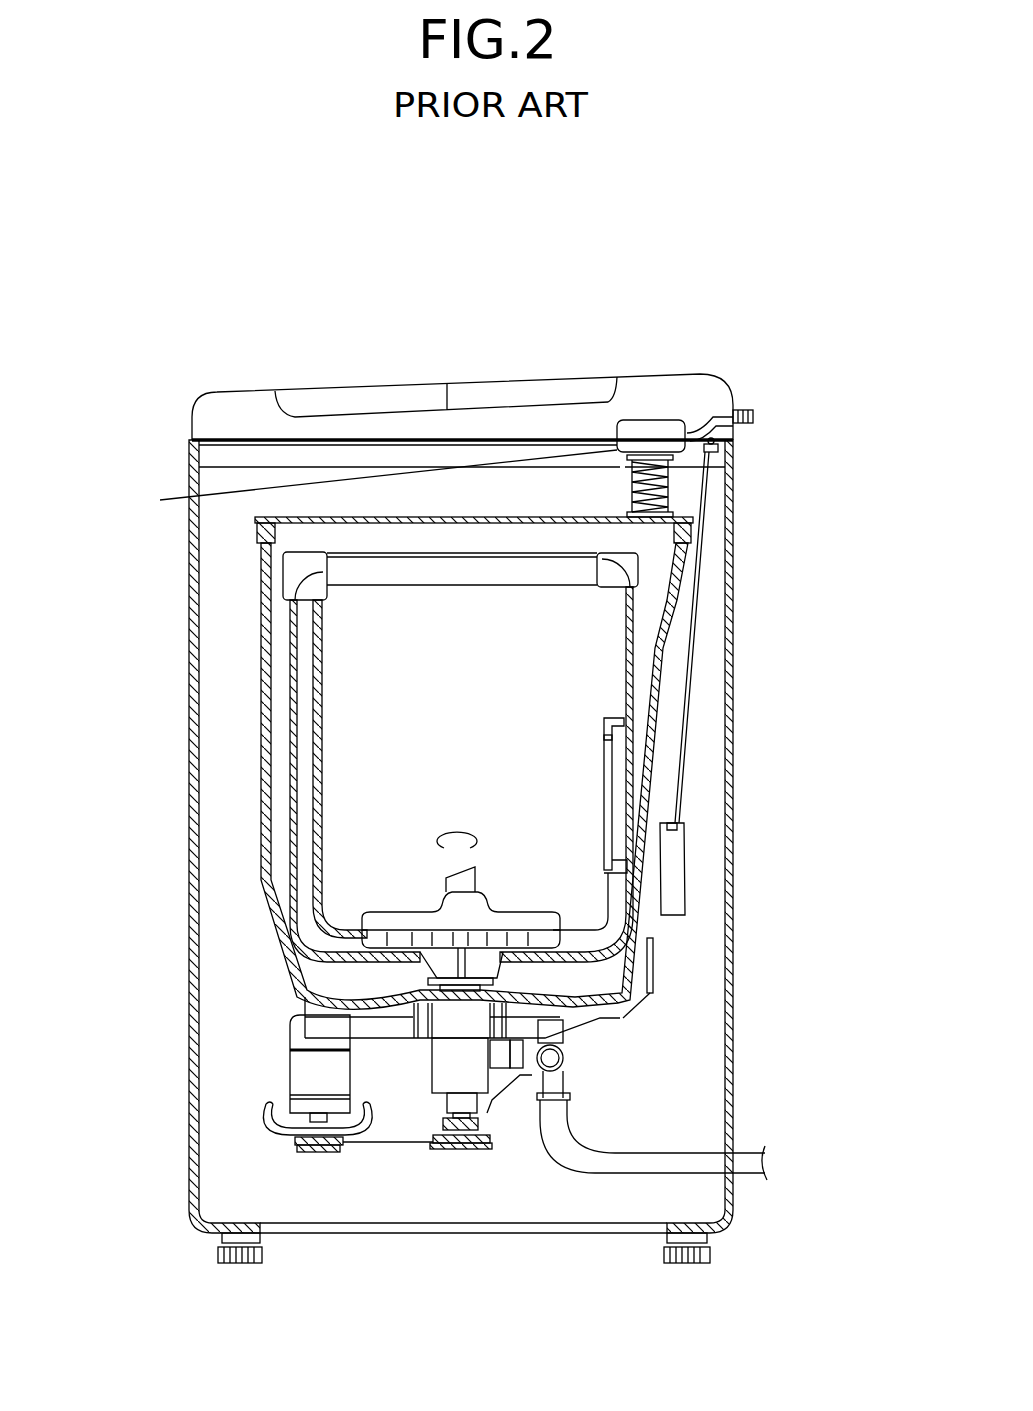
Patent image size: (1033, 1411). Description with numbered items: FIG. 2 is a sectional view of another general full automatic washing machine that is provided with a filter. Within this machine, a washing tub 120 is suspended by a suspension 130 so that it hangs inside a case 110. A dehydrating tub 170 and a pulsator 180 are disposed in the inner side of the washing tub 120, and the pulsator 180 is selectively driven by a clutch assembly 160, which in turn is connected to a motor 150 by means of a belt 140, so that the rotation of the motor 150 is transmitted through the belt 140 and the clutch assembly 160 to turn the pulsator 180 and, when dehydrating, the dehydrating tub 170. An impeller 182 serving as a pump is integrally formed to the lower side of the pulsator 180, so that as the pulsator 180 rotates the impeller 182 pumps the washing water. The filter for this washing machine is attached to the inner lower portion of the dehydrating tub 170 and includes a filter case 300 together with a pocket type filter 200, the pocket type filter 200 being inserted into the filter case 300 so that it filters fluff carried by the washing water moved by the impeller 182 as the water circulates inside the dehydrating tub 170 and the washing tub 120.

The case 110 is at (732, 492).
The washing tub 120 is at (650, 643).
The suspension 130 is at (700, 583).
The dehydrating tub 170 is at (633, 700).
The pocket type filter 200 is at (603, 720).
The filter case 300 is at (603, 828).
The pulsator 180 is at (407, 917).
The impeller 182 is at (380, 960).
The motor 150 is at (295, 1080).
The belt 140 is at (378, 1145).
The clutch assembly 160 is at (457, 1090).